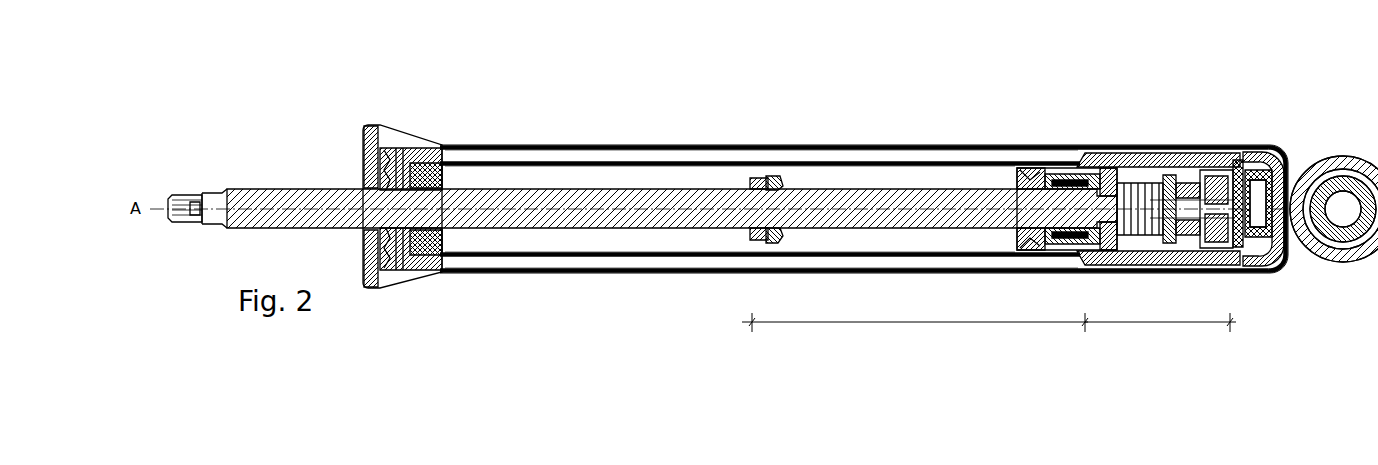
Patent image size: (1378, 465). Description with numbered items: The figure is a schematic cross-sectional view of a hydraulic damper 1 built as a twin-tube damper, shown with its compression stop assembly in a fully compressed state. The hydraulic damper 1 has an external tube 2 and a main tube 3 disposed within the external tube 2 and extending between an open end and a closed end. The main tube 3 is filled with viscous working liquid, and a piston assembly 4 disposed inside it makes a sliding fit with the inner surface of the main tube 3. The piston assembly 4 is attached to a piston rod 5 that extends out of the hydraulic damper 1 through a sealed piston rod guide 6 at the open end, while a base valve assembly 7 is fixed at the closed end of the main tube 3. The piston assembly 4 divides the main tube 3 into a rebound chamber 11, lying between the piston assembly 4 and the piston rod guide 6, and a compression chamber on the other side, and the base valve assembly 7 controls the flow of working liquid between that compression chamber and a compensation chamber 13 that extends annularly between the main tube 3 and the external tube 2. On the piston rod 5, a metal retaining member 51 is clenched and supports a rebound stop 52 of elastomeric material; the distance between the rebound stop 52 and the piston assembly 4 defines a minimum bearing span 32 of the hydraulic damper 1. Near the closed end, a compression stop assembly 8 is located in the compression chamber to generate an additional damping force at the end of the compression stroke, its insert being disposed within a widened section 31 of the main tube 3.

The hydraulic damper 1 is at (872, 140).
The external tube 2 is at (665, 147).
The main tube 3 is at (623, 163).
The piston assembly 4 is at (1037, 158).
The piston rod 5 is at (522, 202).
The piston rod guide 6 is at (438, 145).
The base valve assembly 7 is at (1265, 150).
The compression stop assembly 8 is at (1139, 138).
The rebound chamber 11 is at (592, 180).
The compensation chamber 13 is at (982, 155).
The widened section 31 is at (1160, 332).
The minimum bearing span 32 is at (915, 332).
The metal retaining member 51 is at (775, 174).
The rebound stop 52 is at (757, 176).